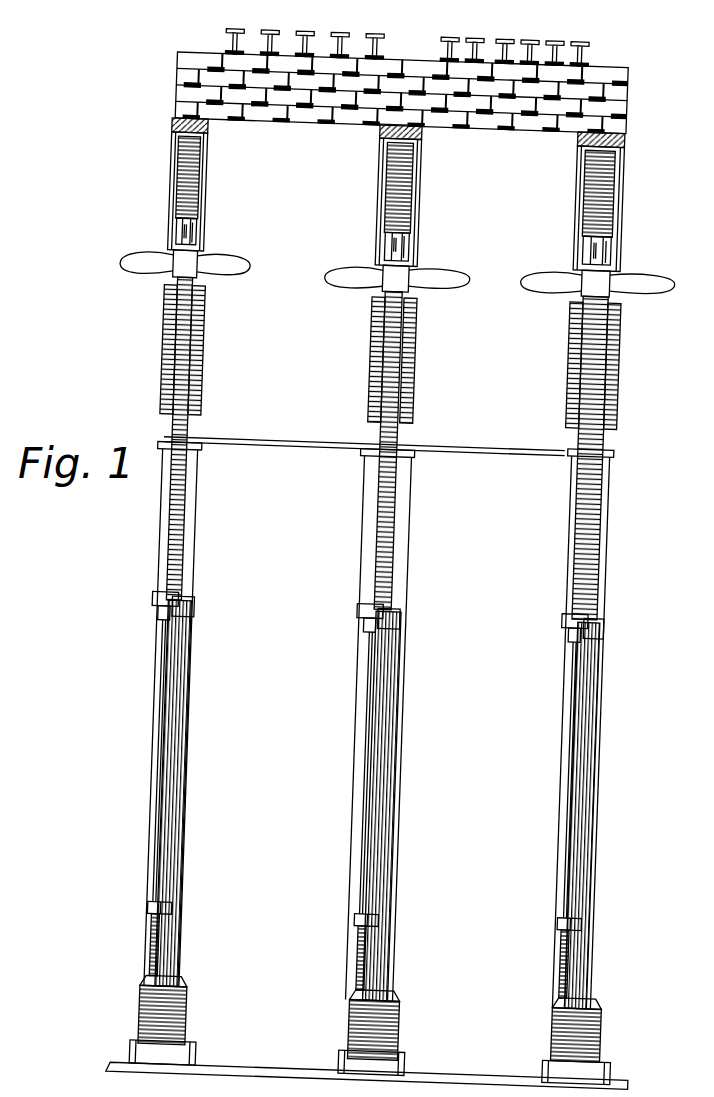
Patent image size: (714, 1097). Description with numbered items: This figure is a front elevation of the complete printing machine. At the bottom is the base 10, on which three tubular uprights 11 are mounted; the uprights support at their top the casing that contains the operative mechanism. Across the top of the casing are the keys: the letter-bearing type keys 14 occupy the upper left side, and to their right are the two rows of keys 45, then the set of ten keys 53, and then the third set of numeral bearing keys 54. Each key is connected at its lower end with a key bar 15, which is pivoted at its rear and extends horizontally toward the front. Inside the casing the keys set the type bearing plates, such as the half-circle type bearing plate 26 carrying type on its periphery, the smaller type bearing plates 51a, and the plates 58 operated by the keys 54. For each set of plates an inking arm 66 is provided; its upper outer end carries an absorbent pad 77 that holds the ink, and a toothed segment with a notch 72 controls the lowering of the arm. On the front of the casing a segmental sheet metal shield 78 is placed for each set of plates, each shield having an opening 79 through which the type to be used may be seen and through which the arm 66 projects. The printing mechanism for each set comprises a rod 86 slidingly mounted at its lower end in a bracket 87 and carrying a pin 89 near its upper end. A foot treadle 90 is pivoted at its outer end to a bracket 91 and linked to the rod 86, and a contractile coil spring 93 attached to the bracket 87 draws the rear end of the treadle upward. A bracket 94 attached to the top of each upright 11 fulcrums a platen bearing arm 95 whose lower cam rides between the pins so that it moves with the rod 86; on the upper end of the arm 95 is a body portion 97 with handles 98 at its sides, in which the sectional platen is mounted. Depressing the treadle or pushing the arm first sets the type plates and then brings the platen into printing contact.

The type keys 14 is at (324, 34).
The keys 45 is at (437, 36).
The keys 53 is at (489, 36).
The numeral bearing keys 54 is at (540, 36).
The arm 66 is at (195, 142).
The absorbent pad 77 is at (195, 150).
The type bearing plates 51a is at (188, 226).
The type bearing plate 26 is at (170, 240).
The plates 58 is at (185, 244).
The opening 79 is at (185, 246).
The body portion 97 is at (391, 274).
The handles 98 is at (244, 273).
The segmental sheet metal shield 78 is at (157, 300).
The platen bearing arm 95 is at (157, 392).
The notch 72 is at (385, 459).
The key bar 15 is at (363, 519).
The bracket 94 is at (198, 604).
The pin 89 is at (200, 620).
The rod 86 is at (205, 666).
The tubular uprights 11 is at (196, 775).
The bracket 87 is at (186, 915).
The contractile coil spring 93 is at (176, 950).
The foot treadle 90 is at (204, 1012).
The bracket 91 is at (380, 1084).
The base 10 is at (480, 1060).